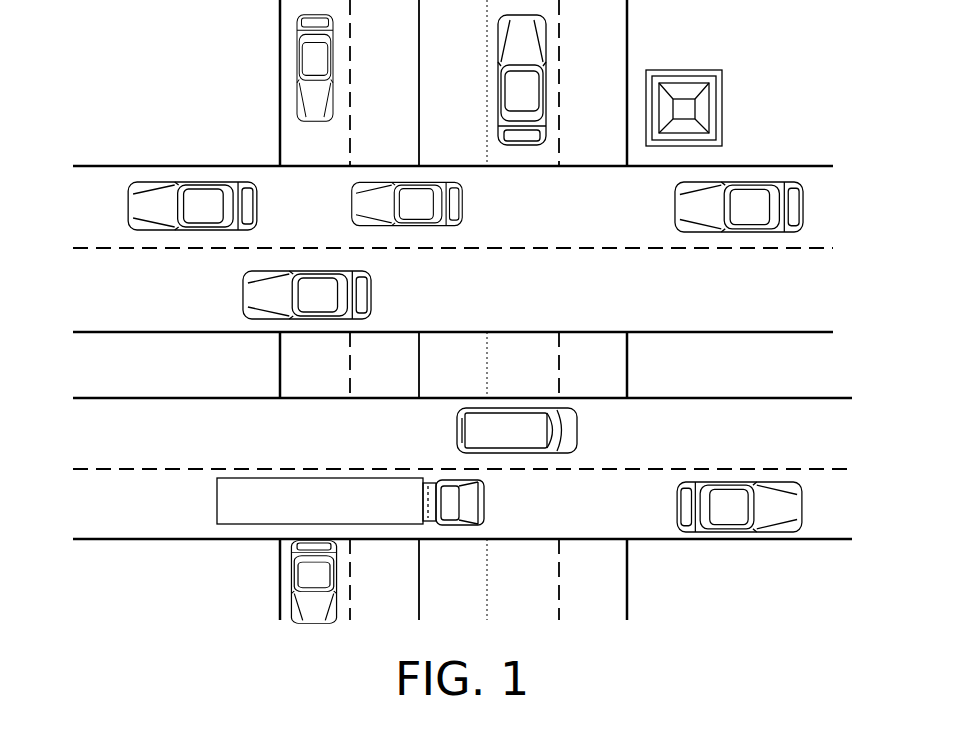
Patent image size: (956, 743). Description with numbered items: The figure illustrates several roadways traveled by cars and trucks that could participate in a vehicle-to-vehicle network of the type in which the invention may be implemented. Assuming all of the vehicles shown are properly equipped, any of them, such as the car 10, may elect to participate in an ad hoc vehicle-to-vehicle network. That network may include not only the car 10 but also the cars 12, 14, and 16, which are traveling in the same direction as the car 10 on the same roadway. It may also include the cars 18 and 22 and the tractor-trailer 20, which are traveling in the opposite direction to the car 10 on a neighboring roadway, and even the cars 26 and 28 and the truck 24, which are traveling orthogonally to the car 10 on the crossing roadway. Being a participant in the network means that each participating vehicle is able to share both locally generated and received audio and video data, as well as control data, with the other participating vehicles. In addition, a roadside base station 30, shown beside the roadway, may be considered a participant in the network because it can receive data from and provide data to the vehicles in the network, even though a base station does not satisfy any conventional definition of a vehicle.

The car 10 is at (242, 313).
The car 12 is at (208, 192).
The car 14 is at (408, 183).
The car 16 is at (753, 190).
The car 18 is at (508, 408).
The tractor-trailer 20 is at (250, 524).
The car 22 is at (767, 530).
The truck 24 is at (293, 578).
The car 26 is at (298, 88).
The car 28 is at (498, 50).
The base station 30 is at (721, 107).